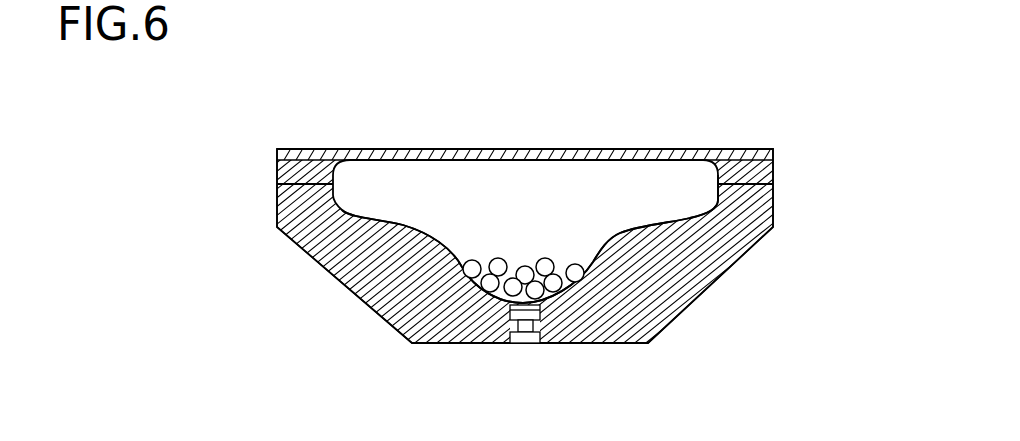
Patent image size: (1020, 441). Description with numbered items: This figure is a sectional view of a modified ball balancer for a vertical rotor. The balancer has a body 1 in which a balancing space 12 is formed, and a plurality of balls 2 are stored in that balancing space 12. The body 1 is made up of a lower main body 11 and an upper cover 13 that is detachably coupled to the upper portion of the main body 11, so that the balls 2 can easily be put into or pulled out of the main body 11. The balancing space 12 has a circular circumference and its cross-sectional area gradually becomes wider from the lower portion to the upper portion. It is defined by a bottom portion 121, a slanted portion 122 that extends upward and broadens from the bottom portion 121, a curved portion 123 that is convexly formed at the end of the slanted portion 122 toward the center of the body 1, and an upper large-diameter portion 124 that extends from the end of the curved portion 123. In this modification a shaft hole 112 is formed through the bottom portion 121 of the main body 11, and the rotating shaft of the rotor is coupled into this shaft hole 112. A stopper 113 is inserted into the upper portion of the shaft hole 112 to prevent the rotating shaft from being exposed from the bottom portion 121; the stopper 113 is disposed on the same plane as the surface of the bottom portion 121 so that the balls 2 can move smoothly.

The body 1 is at (190, 168).
The upper cover 13 is at (278, 163).
The lower main body 11 is at (278, 206).
The balancing space 12 is at (832, 303).
The bottom portion 121 is at (553, 299).
The slanted portion 122 is at (555, 286).
The curved portion 123 is at (615, 210).
The upper large-diameter portion 124 is at (700, 200).
The stopper 113 is at (498, 306).
The shaft hole 112 is at (525, 334).
The balls 2 is at (500, 262).